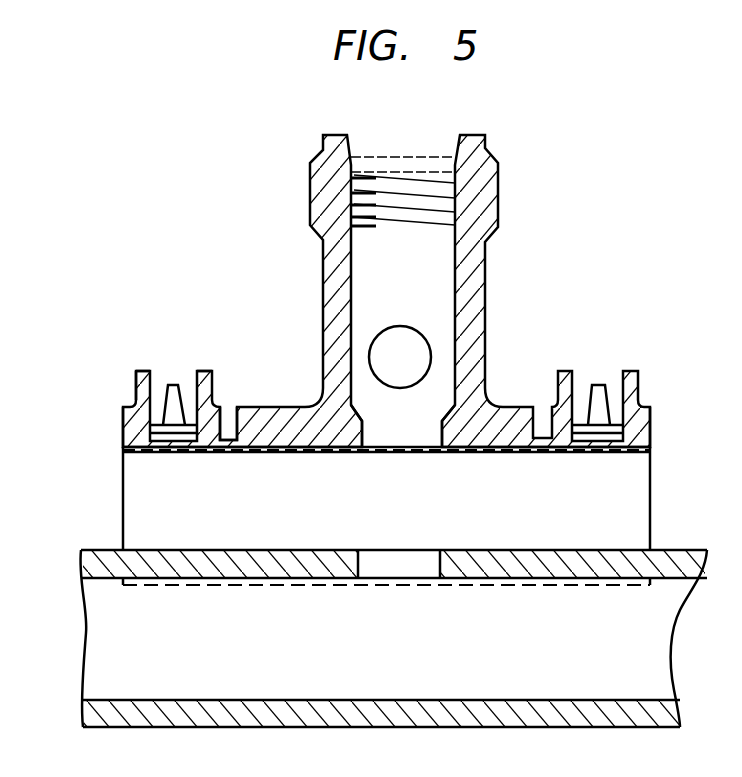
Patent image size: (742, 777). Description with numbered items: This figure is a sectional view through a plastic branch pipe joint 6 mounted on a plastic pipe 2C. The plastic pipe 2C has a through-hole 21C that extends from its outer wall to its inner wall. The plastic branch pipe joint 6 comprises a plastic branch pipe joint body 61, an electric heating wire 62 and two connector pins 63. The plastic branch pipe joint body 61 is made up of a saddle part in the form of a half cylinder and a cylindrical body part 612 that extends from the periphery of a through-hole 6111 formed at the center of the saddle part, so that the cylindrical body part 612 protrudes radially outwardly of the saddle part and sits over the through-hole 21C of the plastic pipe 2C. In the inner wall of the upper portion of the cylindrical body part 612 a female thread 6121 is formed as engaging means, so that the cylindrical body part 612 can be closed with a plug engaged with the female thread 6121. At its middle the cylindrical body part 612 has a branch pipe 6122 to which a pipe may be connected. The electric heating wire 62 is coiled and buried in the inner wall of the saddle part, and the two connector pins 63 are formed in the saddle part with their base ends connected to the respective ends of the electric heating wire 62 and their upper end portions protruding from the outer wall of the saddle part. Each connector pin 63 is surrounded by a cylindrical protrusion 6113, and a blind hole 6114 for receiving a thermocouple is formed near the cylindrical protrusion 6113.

The plastic branch pipe joint 6 is at (358, 310).
The cylindrical body part 612 is at (387, 273).
The female thread 6121 is at (363, 197).
The branch pipe 6122 is at (413, 347).
The through-hole 6111 is at (405, 447).
The cylindrical protrusion 6113 is at (136, 380).
The blind hole 6114 is at (228, 407).
The electric heating wire 62 is at (281, 452).
The connector pins 63 is at (173, 384).
The plastic branch pipe joint body 61 is at (633, 502).
The plastic pipe 2C is at (384, 595).
The through-hole 21C is at (390, 578).